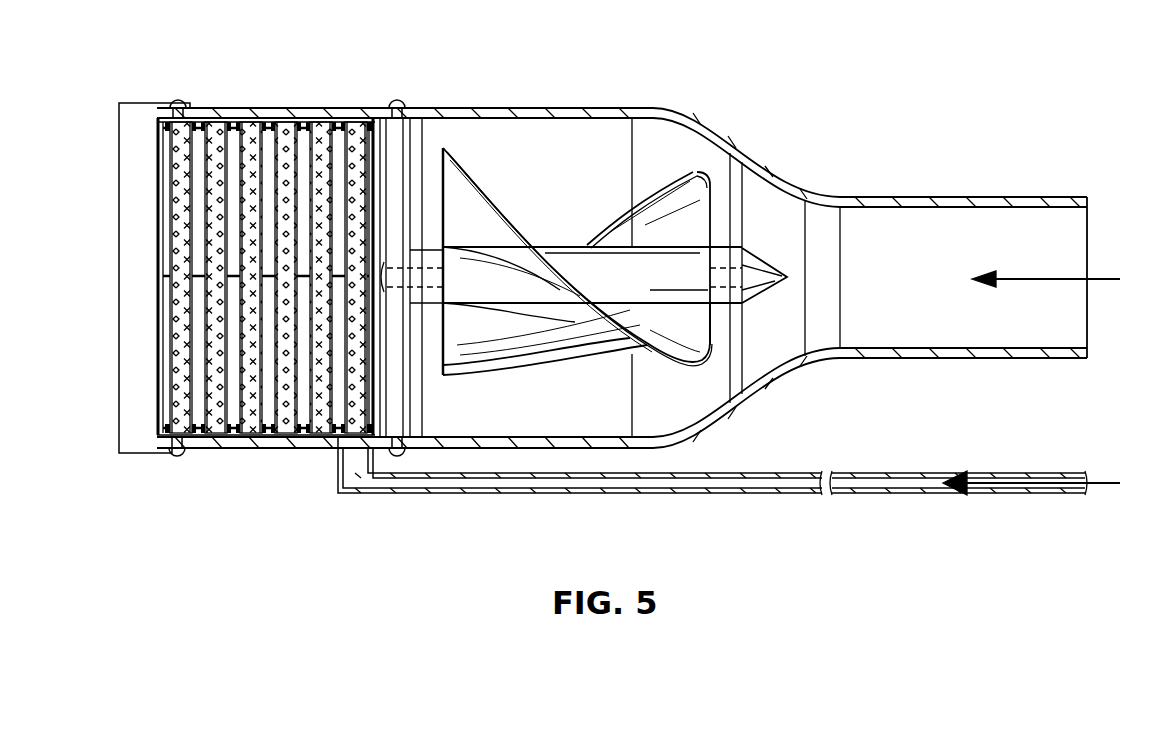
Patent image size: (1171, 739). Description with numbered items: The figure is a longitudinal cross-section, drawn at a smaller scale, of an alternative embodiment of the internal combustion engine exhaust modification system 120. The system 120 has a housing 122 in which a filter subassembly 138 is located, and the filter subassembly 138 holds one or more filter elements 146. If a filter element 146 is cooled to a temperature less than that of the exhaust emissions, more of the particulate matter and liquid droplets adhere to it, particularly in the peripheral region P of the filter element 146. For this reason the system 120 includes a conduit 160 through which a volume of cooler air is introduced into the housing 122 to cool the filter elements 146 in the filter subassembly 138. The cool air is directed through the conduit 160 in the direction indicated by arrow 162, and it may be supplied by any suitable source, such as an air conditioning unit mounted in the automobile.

The system 120 is at (753, 108).
The housing 122 is at (503, 109).
The filter subassembly 138 is at (320, 117).
The peripheral region P is at (358, 117).
The filter element 146 is at (285, 437).
The conduit 160 is at (683, 492).
The arrow 162 is at (1102, 483).